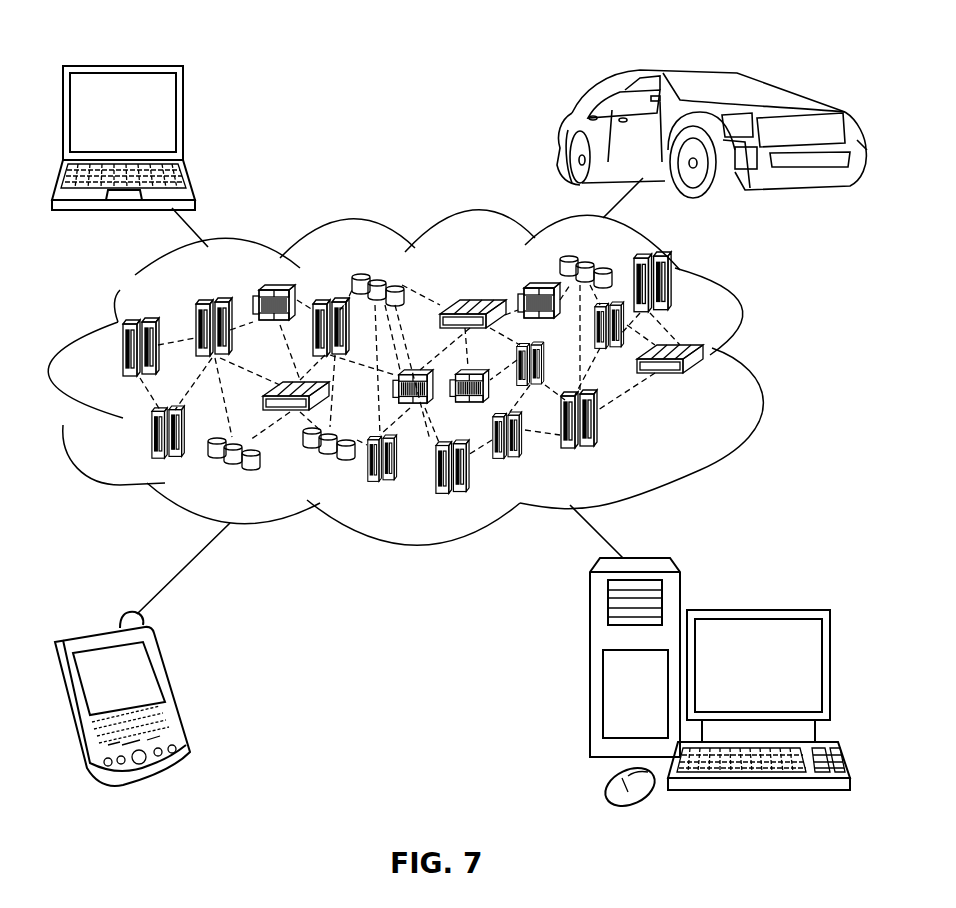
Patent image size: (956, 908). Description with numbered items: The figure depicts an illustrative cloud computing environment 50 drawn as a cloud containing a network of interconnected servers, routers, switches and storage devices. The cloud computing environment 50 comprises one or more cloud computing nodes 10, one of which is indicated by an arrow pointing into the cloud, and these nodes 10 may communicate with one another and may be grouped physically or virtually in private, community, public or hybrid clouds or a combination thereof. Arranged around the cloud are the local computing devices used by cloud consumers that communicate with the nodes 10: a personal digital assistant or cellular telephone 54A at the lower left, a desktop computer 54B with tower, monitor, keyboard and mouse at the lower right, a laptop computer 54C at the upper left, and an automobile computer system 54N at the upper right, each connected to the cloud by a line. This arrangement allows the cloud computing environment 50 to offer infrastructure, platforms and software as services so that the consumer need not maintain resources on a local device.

The laptop computer 54C is at (183, 120).
The automobile computer system 54N is at (562, 133).
The cloud computing environment 50 is at (755, 358).
The cloud computing node 10 is at (707, 384).
The personal digital assistant or cellular telephone 54A is at (175, 688).
The desktop computer 54B is at (755, 607).